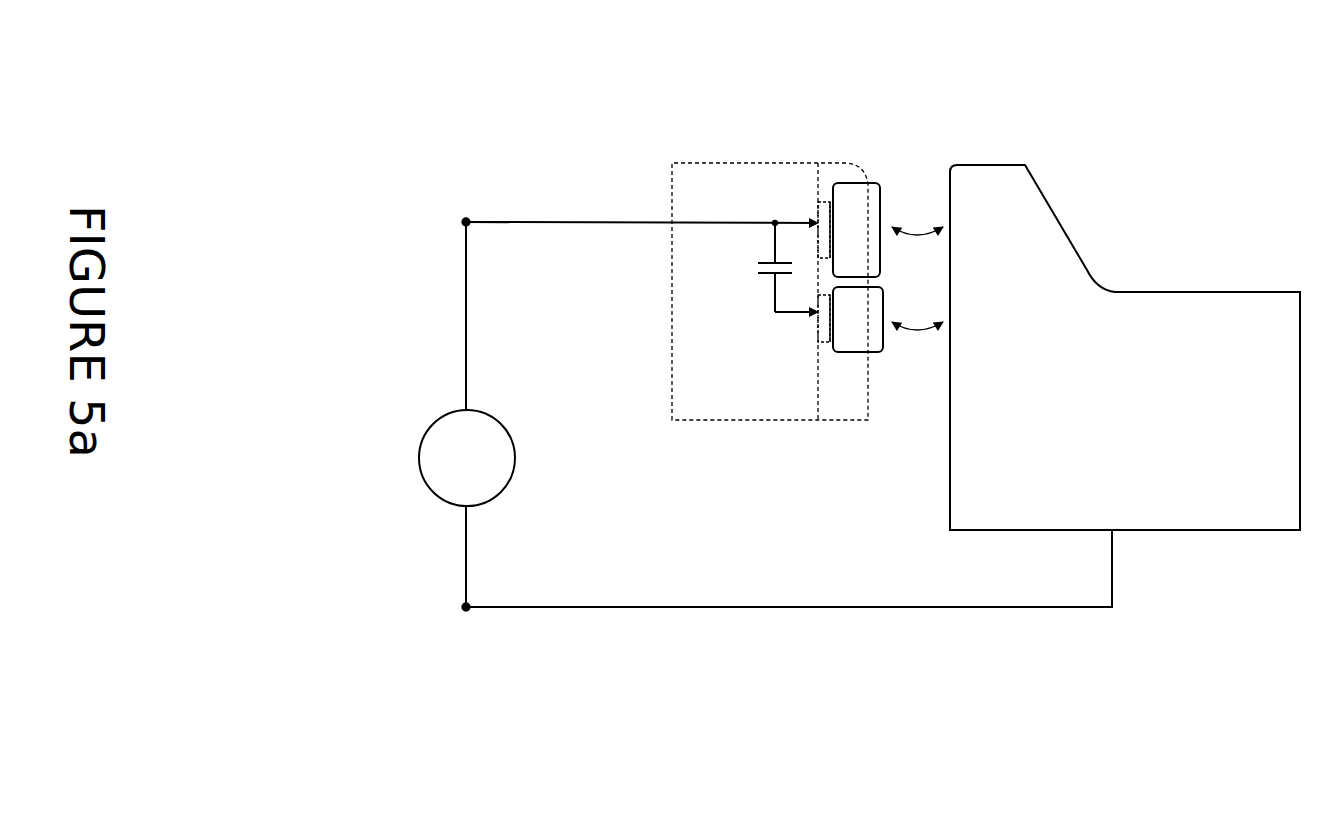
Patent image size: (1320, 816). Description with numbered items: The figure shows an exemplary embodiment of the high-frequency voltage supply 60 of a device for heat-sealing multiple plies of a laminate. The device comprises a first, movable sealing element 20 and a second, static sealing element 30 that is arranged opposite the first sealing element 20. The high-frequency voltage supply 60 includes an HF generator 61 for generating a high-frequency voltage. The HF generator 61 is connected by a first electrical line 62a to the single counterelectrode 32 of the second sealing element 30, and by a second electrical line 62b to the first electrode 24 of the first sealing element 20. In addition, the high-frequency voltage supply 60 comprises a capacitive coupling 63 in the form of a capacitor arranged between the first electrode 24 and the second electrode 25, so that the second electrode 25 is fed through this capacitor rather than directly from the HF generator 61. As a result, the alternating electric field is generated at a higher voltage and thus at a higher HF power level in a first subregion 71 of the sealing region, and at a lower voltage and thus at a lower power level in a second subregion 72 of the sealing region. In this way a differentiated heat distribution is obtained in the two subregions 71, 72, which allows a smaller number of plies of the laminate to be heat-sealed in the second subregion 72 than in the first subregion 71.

The first sealing element 20 is at (697, 435).
The first electrode 24 is at (865, 200).
The second electrode 25 is at (848, 332).
The second sealing element 30 is at (1210, 538).
The counterelectrode 32 is at (950, 492).
The high-frequency voltage supply 60 is at (515, 422).
The HF generator 61 is at (420, 465).
The first electrical line 62a is at (725, 607).
The second electrical line 62b is at (535, 222).
The capacitive coupling 63 is at (775, 252).
The first subregion 71 is at (921, 215).
The second subregion 72 is at (924, 312).